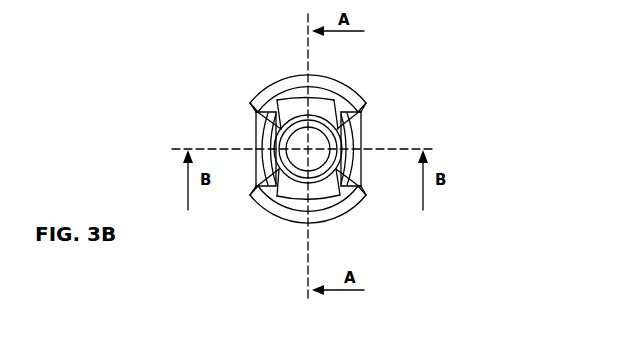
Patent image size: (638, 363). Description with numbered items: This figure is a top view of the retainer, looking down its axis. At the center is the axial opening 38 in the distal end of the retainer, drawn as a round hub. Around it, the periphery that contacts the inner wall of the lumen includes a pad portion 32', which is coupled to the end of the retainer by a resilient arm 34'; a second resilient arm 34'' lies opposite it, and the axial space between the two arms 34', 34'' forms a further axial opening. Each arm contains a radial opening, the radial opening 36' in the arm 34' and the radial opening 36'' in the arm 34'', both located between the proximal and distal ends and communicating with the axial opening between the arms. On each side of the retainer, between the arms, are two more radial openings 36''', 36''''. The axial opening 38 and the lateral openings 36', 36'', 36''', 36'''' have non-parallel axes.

The pad portion 32' is at (266, 131).
The resilient arm 34' is at (266, 97).
The resilient arm 34'' is at (278, 210).
The radial opening 36' is at (364, 95).
The radial opening 36'' is at (349, 206).
The radial opening 36''' is at (419, 139).
The radial opening 36'''' is at (215, 149).
The axial opening 38 is at (322, 143).